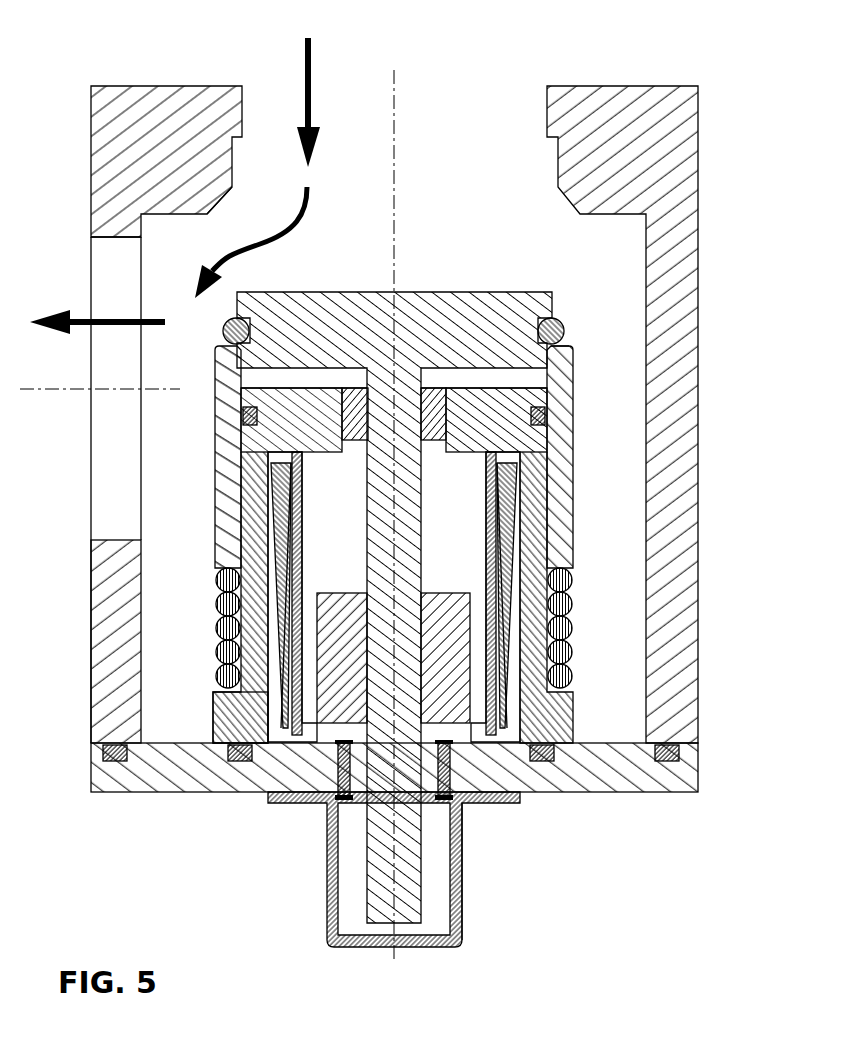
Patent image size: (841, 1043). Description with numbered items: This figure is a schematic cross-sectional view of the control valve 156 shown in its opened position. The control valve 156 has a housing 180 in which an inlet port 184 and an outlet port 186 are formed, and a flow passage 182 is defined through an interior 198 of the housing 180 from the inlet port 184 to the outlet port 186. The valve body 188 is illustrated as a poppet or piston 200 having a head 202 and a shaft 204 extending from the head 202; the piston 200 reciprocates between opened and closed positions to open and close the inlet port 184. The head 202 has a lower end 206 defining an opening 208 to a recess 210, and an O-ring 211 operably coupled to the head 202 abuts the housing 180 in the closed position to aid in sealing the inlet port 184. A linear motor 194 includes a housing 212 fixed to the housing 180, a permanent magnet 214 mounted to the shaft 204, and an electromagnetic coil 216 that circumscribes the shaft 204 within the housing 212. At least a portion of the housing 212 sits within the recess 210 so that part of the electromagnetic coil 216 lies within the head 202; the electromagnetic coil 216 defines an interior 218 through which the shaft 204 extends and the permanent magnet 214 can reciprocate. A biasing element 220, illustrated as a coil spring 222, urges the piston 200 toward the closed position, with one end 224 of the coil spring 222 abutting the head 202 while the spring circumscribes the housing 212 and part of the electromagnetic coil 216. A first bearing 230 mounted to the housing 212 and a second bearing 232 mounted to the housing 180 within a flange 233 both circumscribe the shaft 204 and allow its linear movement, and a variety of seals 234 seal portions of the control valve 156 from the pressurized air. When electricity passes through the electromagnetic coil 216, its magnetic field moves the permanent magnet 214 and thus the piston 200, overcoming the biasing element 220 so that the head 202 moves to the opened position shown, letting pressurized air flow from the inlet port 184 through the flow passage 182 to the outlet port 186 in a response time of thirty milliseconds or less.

The control valve 156 is at (95, 60).
The housing 180 is at (166, 82).
The flow passage 182 is at (310, 215).
The inlet port 184 is at (242, 113).
The outlet port 186 is at (113, 240).
The valve body 188 is at (453, 287).
The linear motor 194 is at (493, 750).
The interior 198 is at (362, 264).
The piston 200 is at (579, 493).
The head 202 is at (573, 360).
The shaft 204 is at (421, 380).
The lower end 206 is at (217, 580).
The opening 208 is at (217, 657).
The recess 210 is at (265, 376).
The O-ring 211 is at (542, 322).
The housing 212 is at (250, 720).
The permanent magnet 214 is at (328, 727).
The electromagnetic coil 216 is at (530, 694).
The interior 218 is at (475, 537).
The biasing element 220 is at (218, 660).
The coil spring 222 is at (208, 683).
The end 224 is at (217, 603).
The first bearing 230 is at (447, 422).
The second bearing 232 is at (436, 800).
The flange 233 is at (462, 806).
The seals 234 is at (545, 420).